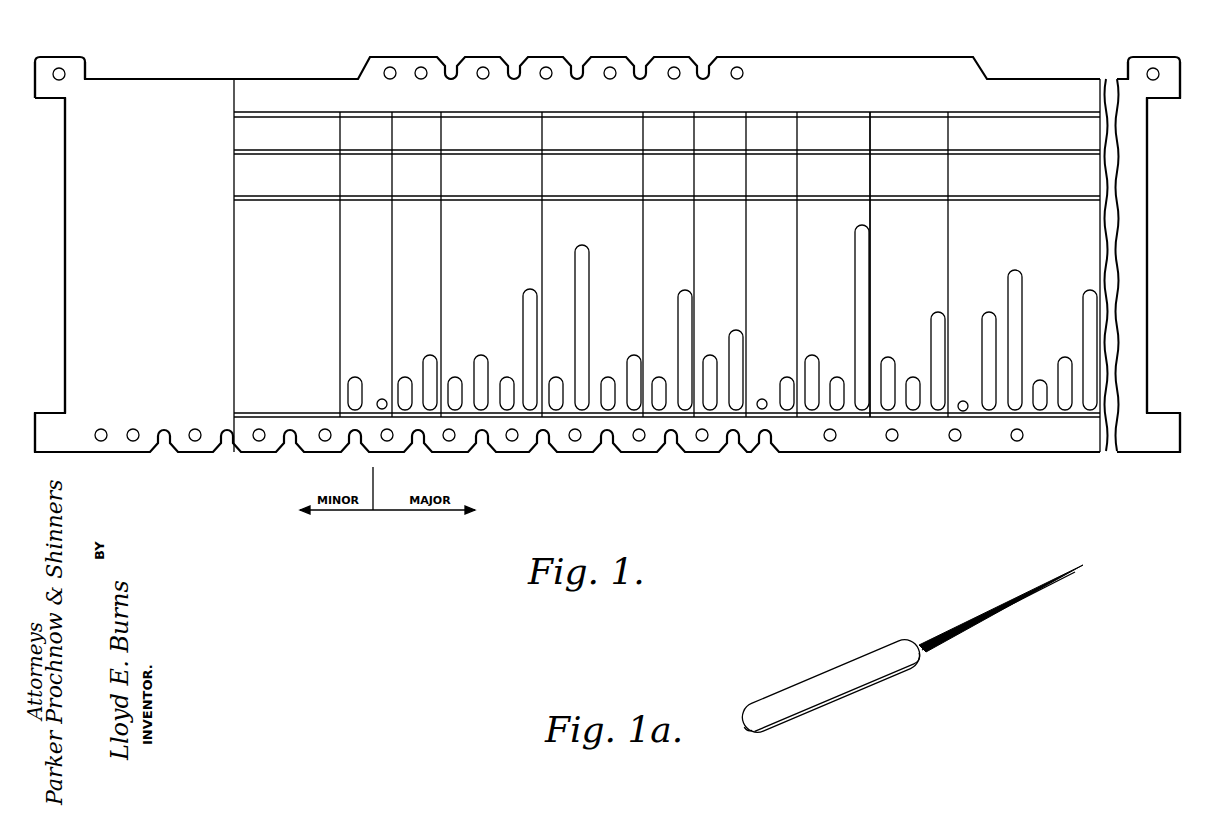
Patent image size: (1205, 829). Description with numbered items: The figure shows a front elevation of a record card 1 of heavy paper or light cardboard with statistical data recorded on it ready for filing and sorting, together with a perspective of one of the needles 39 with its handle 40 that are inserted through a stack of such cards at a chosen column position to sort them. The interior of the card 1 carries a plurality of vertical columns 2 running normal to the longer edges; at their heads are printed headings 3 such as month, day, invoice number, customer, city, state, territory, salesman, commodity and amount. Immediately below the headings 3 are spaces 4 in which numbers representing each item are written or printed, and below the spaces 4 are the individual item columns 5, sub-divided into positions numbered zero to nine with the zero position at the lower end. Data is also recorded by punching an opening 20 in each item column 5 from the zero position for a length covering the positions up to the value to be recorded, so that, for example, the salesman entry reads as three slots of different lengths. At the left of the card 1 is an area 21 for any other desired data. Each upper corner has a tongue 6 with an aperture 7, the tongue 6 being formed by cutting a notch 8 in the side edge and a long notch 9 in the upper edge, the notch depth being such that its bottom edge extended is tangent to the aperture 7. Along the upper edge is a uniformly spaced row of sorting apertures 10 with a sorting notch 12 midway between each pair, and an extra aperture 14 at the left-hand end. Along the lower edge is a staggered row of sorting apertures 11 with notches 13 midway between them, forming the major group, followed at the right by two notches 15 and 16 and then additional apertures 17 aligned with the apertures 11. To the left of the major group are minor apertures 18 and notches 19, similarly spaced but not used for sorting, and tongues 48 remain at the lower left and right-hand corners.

In FIG. 1, the record card 1 is at (1014, 86).
In FIG. 1, the columns 2 is at (878, 135).
In FIG. 1, the headings 3 is at (614, 127).
In FIG. 1, the spaces 4 is at (346, 173).
In FIG. 1, the item columns 5 is at (818, 208).
In FIG. 1, the tongue 6 is at (50, 61).
In FIG. 1, the aperture 7 is at (63, 70).
In FIG. 1, the notch 8 is at (64, 156).
In FIG. 1, the notch 9 is at (140, 79).
In FIG. 1, the apertures 10 is at (480, 68).
In FIG. 1, the apertures 11 is at (388, 448).
In FIG. 1, the notch 12 is at (452, 75).
In FIG. 1, the notch 13 is at (424, 434).
In FIG. 1, the extra aperture 14 is at (389, 68).
In FIG. 1, the notch 15 is at (735, 445).
In FIG. 1, the notch 16 is at (767, 446).
In FIG. 1, the additional apertures 17 is at (893, 442).
In FIG. 1, the additional apertures 18 is at (306, 453).
In FIG. 1, the notches 19 is at (350, 445).
In FIG. 1, the opening 20 is at (762, 402).
In FIG. 1, the area 21 is at (609, 303).
In FIG. 1, the tongues 48 is at (38, 422).
In FIG. 1A, the needle 39 is at (983, 624).
In FIG. 1A, the handle 40 is at (824, 680).